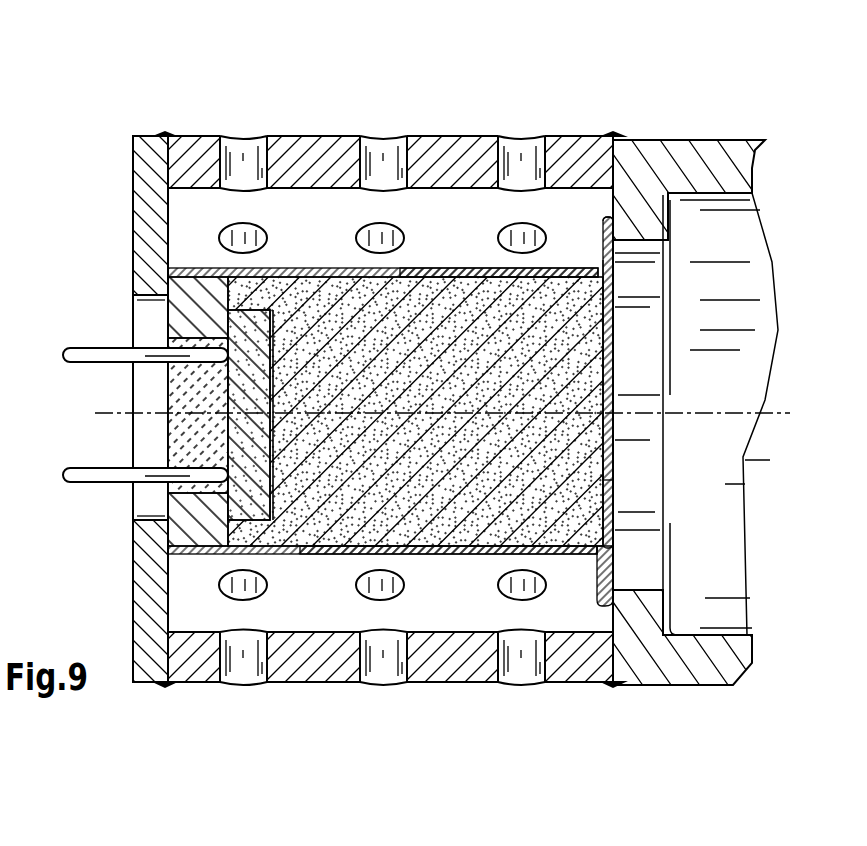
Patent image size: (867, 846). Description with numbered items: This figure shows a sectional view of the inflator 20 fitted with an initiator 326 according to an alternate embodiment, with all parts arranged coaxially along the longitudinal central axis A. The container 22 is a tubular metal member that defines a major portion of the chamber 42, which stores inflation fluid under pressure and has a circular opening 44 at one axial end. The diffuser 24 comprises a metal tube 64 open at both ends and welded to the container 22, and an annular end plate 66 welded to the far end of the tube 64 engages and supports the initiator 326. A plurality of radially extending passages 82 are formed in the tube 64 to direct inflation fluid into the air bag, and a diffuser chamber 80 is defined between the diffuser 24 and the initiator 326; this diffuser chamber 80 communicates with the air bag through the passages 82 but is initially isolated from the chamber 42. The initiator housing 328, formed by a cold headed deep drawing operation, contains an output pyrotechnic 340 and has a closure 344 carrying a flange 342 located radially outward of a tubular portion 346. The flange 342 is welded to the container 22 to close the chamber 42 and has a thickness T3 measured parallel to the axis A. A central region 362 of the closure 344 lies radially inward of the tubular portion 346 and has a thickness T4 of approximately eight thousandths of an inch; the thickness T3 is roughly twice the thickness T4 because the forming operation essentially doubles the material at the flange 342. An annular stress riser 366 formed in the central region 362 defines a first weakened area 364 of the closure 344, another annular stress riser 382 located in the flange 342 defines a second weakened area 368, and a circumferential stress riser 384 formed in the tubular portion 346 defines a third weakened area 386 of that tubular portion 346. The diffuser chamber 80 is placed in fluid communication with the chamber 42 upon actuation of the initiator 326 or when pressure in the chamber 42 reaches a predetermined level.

The inflator 20 is at (612, 107).
The container 22 is at (703, 138).
The diffuser 24 is at (205, 133).
The chamber 42 is at (718, 585).
The circular opening 44 is at (647, 585).
The metal tube 64 is at (330, 143).
The annular end plate 66 is at (168, 178).
The diffuser chamber 80 is at (314, 601).
The radially extending passages 82 is at (527, 156).
The initiator 326 is at (210, 252).
The initiator housing 328 is at (295, 268).
The output pyrotechnic 340 is at (353, 338).
The flange 342 is at (604, 610).
The closure 344 is at (613, 273).
The tubular portion 346 is at (445, 556).
The central region 362 is at (613, 333).
The first weakened area 364 is at (627, 520).
The annular stress riser 366 is at (617, 302).
The second weakened area 368 is at (614, 250).
The annular stress riser 382 is at (627, 240).
The circumferential stress riser 384 is at (487, 270).
The third weakened area 386 is at (485, 558).
The longitudinal central axis A is at (727, 412).
The flange thickness T3 is at (565, 572).
The central region thickness T4 is at (570, 482).